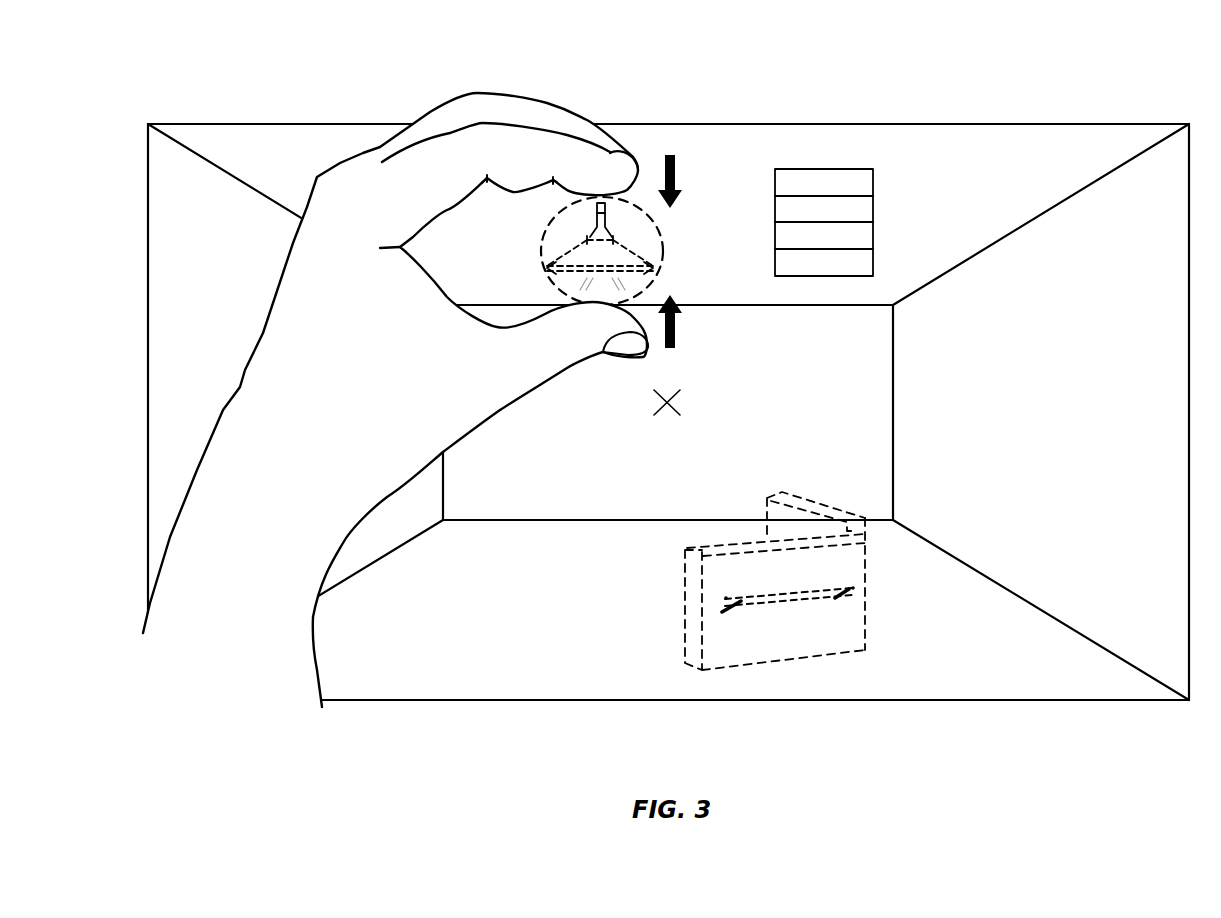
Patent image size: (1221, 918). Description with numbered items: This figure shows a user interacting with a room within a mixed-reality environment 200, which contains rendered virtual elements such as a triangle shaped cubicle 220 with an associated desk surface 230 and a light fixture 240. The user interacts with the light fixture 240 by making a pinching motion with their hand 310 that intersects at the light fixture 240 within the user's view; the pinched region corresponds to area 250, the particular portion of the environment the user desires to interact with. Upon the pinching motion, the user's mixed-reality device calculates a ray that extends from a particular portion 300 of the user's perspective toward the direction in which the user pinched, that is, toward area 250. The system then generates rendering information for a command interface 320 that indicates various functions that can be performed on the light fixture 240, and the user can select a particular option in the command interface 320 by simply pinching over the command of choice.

The mixed-reality environment 200 is at (1116, 92).
The triangle shaped cubicle 220 is at (677, 603).
The desk surface 230 is at (840, 584).
The light fixture 240 is at (641, 252).
The area 250 is at (545, 236).
The particular portion of the user's perspective 300 is at (690, 389).
The hand 310 is at (574, 114).
The command interface 320 is at (899, 180).